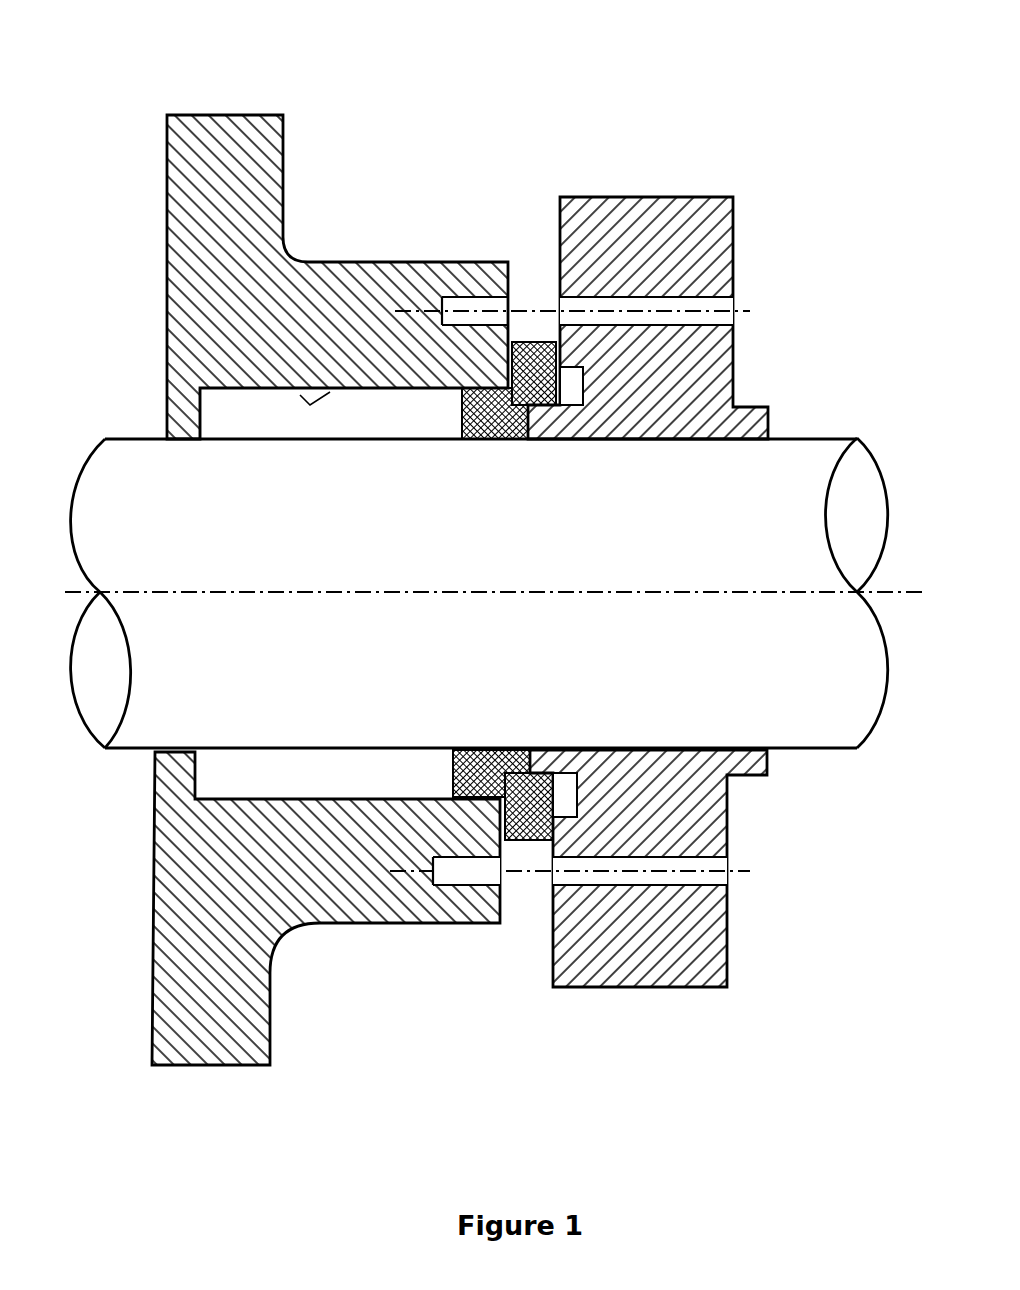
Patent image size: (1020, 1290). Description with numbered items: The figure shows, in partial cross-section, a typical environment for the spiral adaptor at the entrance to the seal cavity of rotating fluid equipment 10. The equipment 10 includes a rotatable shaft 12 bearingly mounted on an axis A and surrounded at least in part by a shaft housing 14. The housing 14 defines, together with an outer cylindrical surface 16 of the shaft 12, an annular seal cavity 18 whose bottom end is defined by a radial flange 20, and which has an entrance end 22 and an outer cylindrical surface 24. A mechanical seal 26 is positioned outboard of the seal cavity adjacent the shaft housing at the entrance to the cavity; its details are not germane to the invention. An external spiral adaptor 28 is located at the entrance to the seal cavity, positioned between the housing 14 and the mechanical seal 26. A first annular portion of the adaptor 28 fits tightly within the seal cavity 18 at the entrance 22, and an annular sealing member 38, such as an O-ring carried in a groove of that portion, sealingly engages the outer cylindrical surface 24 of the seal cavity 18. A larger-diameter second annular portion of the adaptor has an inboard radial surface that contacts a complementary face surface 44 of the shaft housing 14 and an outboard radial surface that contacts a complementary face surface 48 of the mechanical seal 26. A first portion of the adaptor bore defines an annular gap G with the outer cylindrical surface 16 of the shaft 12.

The rotating fluid equipment 10 is at (377, 109).
The rotatable shaft 12 is at (479, 584).
The shaft housing 14 is at (302, 277).
The outer cylindrical surface 16 is at (122, 750).
The annular seal cavity 18 is at (242, 404).
The radial flange 20 is at (160, 782).
The entrance end 22 is at (447, 413).
The outer cylindrical surface 24 is at (300, 395).
The mechanical seal 26 is at (655, 232).
The external spiral adaptor 28 is at (533, 336).
The annular sealing member 38 is at (452, 926).
The face surface 44 is at (506, 860).
The face surface 48 is at (540, 337).
The axis A is at (182, 589).
The annular gap G is at (491, 445).